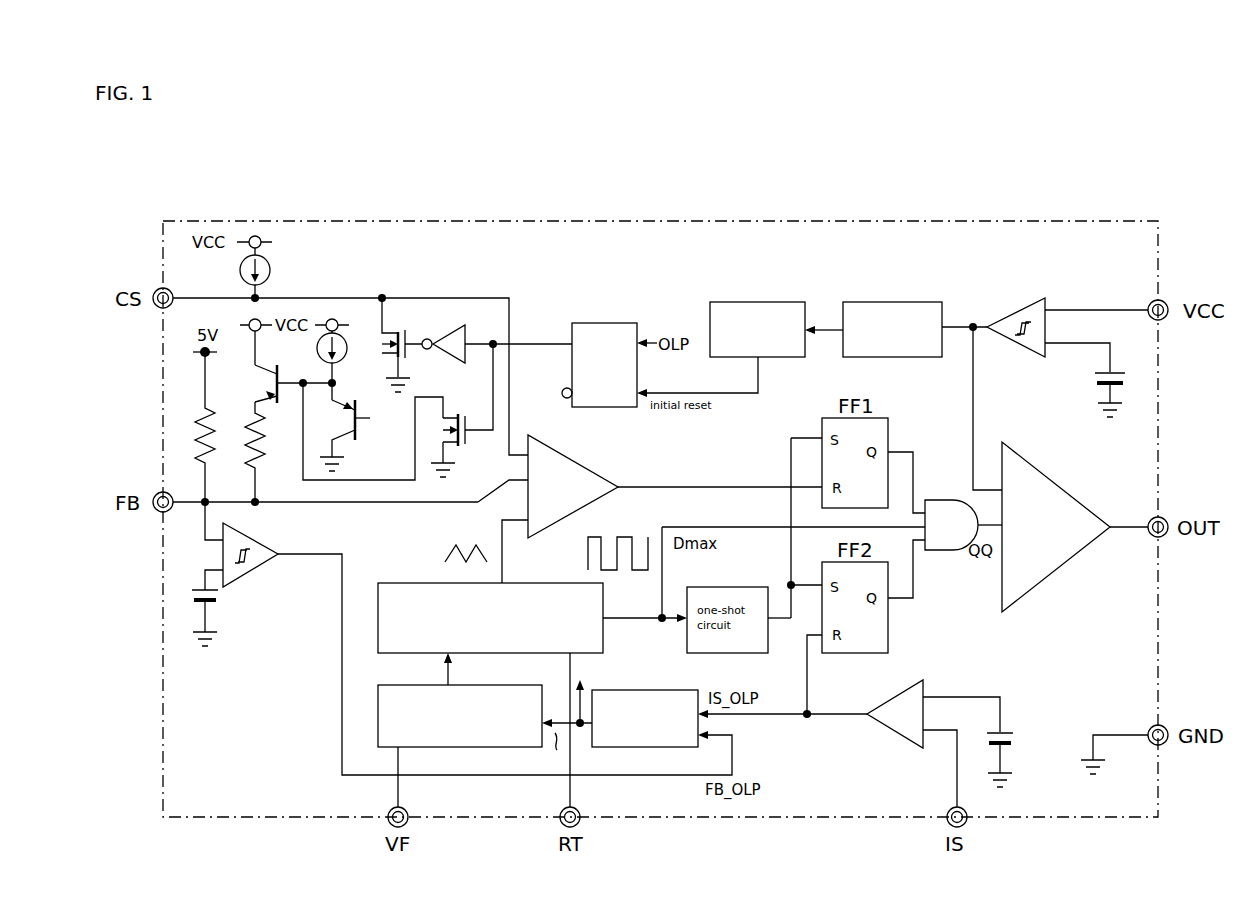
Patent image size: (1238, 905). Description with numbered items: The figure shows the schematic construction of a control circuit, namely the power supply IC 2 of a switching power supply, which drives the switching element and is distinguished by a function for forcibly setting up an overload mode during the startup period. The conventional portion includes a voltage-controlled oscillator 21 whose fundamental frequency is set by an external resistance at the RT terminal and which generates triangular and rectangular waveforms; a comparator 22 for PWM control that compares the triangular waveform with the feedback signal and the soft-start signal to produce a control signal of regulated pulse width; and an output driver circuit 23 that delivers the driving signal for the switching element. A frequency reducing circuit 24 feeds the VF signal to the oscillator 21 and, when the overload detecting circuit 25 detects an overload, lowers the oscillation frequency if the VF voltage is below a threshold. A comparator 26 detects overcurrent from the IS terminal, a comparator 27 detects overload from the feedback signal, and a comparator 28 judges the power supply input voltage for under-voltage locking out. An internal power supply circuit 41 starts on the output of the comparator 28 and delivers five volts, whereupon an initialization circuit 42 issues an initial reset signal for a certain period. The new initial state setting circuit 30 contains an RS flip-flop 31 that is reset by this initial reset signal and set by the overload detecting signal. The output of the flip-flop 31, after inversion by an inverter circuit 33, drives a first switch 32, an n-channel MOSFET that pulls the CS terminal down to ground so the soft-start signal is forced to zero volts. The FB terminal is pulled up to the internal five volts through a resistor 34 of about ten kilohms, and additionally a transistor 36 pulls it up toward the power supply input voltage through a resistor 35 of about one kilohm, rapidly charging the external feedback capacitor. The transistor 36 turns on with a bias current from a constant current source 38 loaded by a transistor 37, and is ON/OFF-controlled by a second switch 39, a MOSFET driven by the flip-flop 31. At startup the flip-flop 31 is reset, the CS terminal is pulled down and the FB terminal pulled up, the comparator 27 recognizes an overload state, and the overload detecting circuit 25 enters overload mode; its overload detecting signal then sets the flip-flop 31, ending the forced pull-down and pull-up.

The power supply IC 2 is at (1142, 262).
The oscillator 21 is at (398, 582).
The comparator for PWM control 22 is at (578, 462).
The output driver circuit 23 is at (1062, 496).
The frequency reducing circuit 24 is at (378, 718).
The overload detecting circuit 25 is at (647, 689).
The comparator 26 is at (882, 739).
The comparator for overload detection 27 is at (262, 565).
The comparator for under-voltage locking out 28 is at (1047, 301).
The initial state setting circuit 30 is at (324, 241).
The RS flip-flop 31 is at (578, 322).
The first switch 32 is at (402, 340).
The inverter circuit 33 is at (465, 338).
The resistor 34 is at (205, 418).
The resistor 35 is at (255, 420).
The transistor 36 is at (280, 372).
The transistor 37 is at (345, 440).
The constant current source 38 is at (347, 358).
The second switch 39 is at (458, 416).
The internal power supply circuit 41 is at (893, 301).
The initialization circuit 42 is at (758, 301).